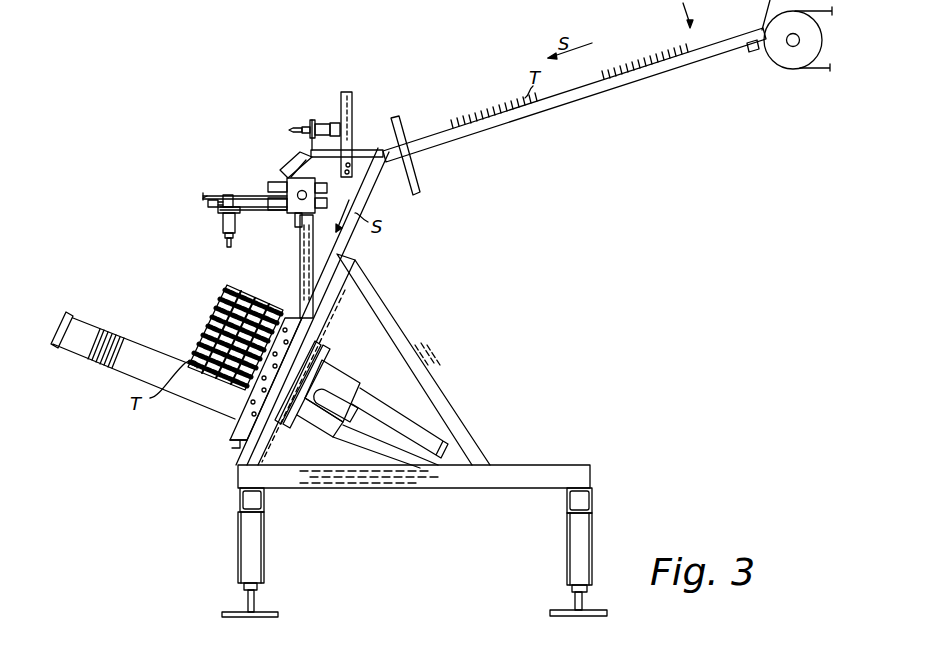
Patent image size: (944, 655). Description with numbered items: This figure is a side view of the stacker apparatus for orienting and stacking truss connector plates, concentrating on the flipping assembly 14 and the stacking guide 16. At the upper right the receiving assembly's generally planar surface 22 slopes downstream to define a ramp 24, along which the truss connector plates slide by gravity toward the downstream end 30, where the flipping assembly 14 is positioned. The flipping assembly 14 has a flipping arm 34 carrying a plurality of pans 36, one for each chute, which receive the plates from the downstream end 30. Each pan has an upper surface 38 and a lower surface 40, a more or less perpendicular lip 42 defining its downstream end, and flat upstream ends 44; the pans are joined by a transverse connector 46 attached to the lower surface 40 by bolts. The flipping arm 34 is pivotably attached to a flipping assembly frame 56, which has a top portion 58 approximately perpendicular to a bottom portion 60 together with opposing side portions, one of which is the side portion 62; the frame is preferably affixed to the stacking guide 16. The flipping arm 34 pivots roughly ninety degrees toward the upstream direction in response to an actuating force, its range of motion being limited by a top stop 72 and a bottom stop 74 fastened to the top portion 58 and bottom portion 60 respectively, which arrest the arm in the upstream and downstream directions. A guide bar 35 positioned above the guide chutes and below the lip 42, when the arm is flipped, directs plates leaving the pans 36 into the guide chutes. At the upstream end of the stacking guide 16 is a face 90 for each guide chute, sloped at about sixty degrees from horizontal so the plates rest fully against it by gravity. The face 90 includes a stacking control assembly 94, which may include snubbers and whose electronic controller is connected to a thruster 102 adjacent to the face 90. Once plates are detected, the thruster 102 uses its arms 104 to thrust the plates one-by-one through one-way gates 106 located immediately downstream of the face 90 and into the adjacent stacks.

The flipping assembly 14 is at (250, 108).
The stacking guide 16 is at (164, 202).
The generally planar surface 22 is at (723, 33).
The ramp 24 is at (578, 133).
The downstream end 30 is at (375, 165).
The flipping arm 34 is at (222, 214).
The guide bar 35 is at (348, 92).
The pans 36 is at (205, 200).
The upper surface 38 is at (242, 200).
The lower surface 40 is at (252, 212).
The lip 42 is at (208, 207).
The upstream ends 44 is at (327, 191).
The transverse connector 46 is at (225, 248).
The flipping assembly frame 56 is at (296, 160).
The top portion 58 is at (308, 150).
The bottom portion 60 is at (282, 222).
The side portion 62 is at (288, 156).
The top stop 72 is at (331, 120).
The bottom stop 74 is at (232, 196).
The face 90 is at (305, 340).
The stacking control assembly 94 is at (361, 491).
The thruster 102 is at (345, 380).
The arms 104 is at (273, 404).
The one-way gates 106 is at (225, 406).